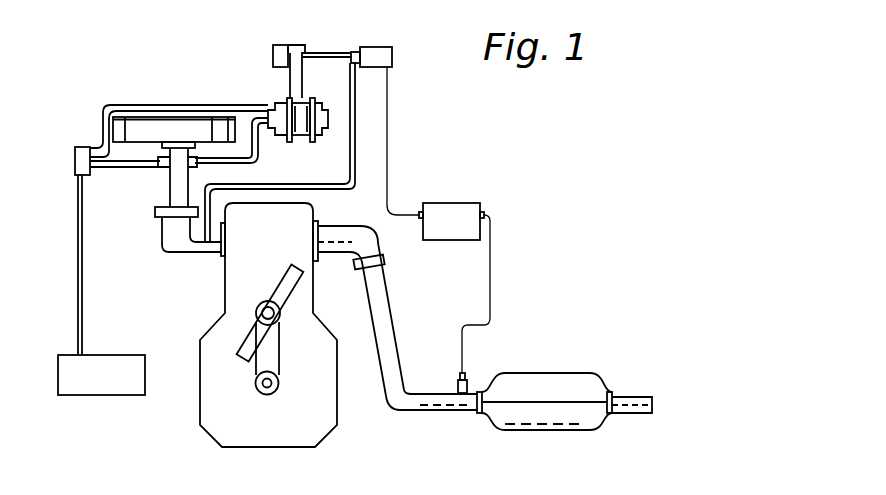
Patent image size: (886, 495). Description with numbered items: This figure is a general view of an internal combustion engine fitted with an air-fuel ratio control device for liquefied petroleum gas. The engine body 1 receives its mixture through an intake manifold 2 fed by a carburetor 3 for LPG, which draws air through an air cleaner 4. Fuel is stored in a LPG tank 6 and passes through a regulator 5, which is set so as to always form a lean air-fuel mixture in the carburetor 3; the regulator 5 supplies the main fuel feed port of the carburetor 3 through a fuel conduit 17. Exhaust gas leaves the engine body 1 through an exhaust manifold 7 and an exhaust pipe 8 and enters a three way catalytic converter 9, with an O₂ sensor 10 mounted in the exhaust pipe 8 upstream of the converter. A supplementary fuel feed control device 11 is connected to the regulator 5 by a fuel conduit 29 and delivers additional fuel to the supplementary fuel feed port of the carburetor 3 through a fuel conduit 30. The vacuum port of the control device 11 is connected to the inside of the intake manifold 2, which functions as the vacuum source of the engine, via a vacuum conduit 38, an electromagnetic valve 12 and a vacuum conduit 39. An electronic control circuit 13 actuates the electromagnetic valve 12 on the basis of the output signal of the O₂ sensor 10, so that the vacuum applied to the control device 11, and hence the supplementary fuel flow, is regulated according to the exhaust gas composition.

The engine body 1 is at (312, 428).
The intake manifold 2 is at (181, 251).
The carburetor 3 is at (168, 176).
The air cleaner 4 is at (163, 122).
The regulator 5 is at (75, 160).
The LPG tank 6 is at (83, 395).
The exhaust manifold 7 is at (337, 256).
The exhaust pipe 8 is at (412, 412).
The three way catalytic converter 9 is at (542, 430).
The O₂ sensor 10 is at (468, 378).
The supplementary fuel feed control device 11 is at (308, 136).
The electromagnetic valve 12 is at (375, 50).
The electronic control circuit 13 is at (453, 208).
The fuel conduit 17 is at (115, 168).
The fuel conduit 29 is at (200, 107).
The fuel conduit 30 is at (255, 157).
The vacuum conduit 38 is at (326, 53).
The vacuum conduit 39 is at (352, 190).